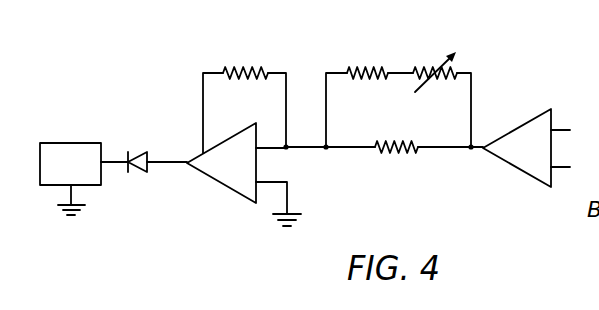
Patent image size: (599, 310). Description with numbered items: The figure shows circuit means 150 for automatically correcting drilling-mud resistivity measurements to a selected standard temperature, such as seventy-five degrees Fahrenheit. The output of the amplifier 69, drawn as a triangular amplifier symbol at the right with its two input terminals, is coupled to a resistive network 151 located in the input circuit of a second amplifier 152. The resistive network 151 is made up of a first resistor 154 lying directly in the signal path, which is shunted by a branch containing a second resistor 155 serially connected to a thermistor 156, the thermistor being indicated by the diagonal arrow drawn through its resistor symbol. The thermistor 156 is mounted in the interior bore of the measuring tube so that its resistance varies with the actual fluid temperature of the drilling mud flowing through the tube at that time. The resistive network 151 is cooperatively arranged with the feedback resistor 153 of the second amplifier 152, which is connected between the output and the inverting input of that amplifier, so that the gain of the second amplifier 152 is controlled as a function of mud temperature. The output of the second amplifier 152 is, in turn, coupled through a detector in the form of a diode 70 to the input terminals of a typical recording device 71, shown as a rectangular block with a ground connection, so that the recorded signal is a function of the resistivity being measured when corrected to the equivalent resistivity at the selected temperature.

The recording device 71 is at (70, 142).
The diode 70 is at (136, 174).
The second amplifier 152 is at (225, 190).
The feedback resistor 153 is at (245, 64).
The circuit means 150 is at (307, 44).
The second resistor 155 is at (369, 67).
The thermistor 156 is at (431, 58).
The first resistor 154 is at (403, 154).
The resistive network 151 is at (444, 170).
The amplifier 69 is at (527, 125).